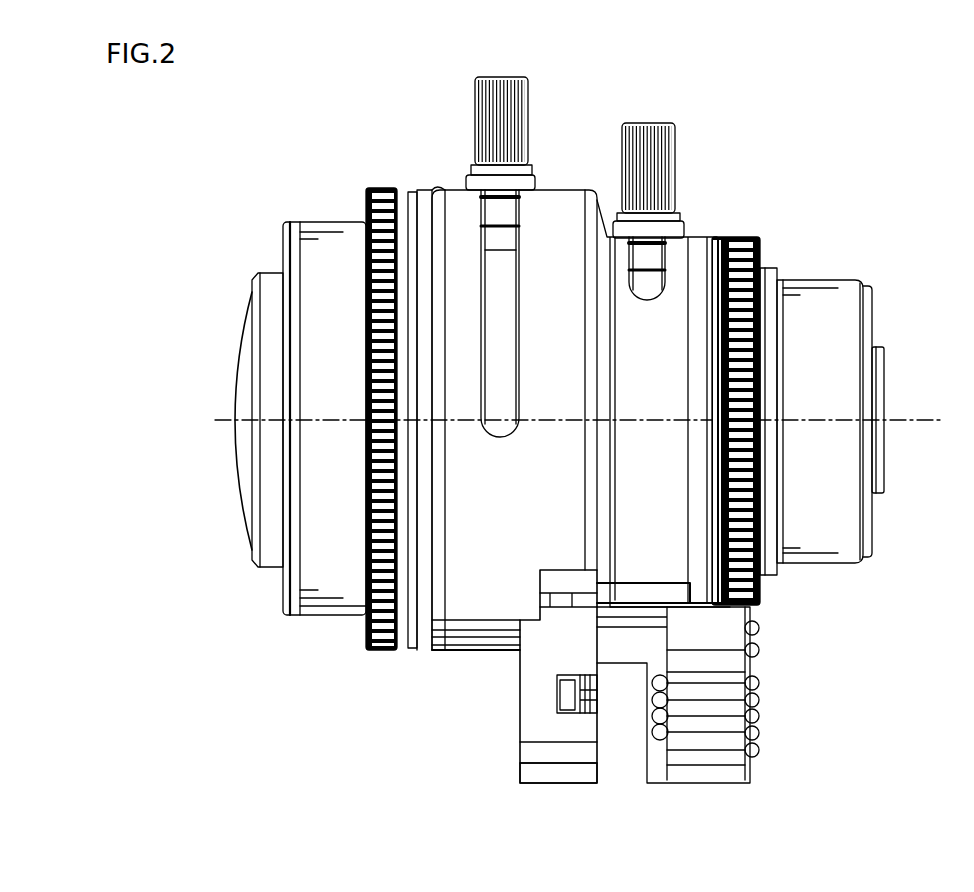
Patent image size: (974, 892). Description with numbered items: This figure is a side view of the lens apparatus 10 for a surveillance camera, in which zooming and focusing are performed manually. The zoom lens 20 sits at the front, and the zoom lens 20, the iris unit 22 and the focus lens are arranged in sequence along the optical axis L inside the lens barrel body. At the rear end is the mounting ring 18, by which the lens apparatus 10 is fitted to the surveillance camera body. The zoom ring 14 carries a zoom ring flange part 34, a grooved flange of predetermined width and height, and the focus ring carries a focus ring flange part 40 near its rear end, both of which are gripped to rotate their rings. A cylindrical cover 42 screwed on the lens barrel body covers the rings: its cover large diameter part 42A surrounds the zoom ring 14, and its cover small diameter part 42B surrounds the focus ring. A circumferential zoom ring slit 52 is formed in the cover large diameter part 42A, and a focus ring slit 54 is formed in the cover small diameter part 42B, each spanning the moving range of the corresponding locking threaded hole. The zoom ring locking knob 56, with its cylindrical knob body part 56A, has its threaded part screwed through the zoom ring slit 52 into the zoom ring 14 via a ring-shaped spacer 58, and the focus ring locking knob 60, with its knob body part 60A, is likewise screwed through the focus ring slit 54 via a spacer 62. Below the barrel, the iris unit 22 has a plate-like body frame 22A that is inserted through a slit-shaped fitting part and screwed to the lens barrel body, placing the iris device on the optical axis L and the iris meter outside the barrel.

The lens apparatus for a surveillance camera 10 is at (797, 96).
The zoom ring 14 is at (327, 616).
The mounting ring 18 is at (836, 556).
The zoom lens 20 is at (245, 488).
The iris unit 22 is at (511, 796).
The body frame 22A is at (563, 758).
The zoom ring flange part 34 is at (384, 651).
The focus ring flange part 40 is at (745, 240).
The cover 42 is at (463, 664).
The cover large diameter part 42A is at (492, 640).
The cover small diameter part 42B is at (663, 585).
The zoom ring slit 52 is at (506, 432).
The focus ring slit 54 is at (657, 302).
The zoom ring locking knob 56 is at (471, 74).
The knob body part 56A is at (530, 97).
The spacer 58 is at (473, 183).
The focus ring locking knob 60 is at (655, 114).
The knob body part 60A is at (676, 153).
The spacer 62 is at (672, 228).
The optical axis L is at (912, 420).